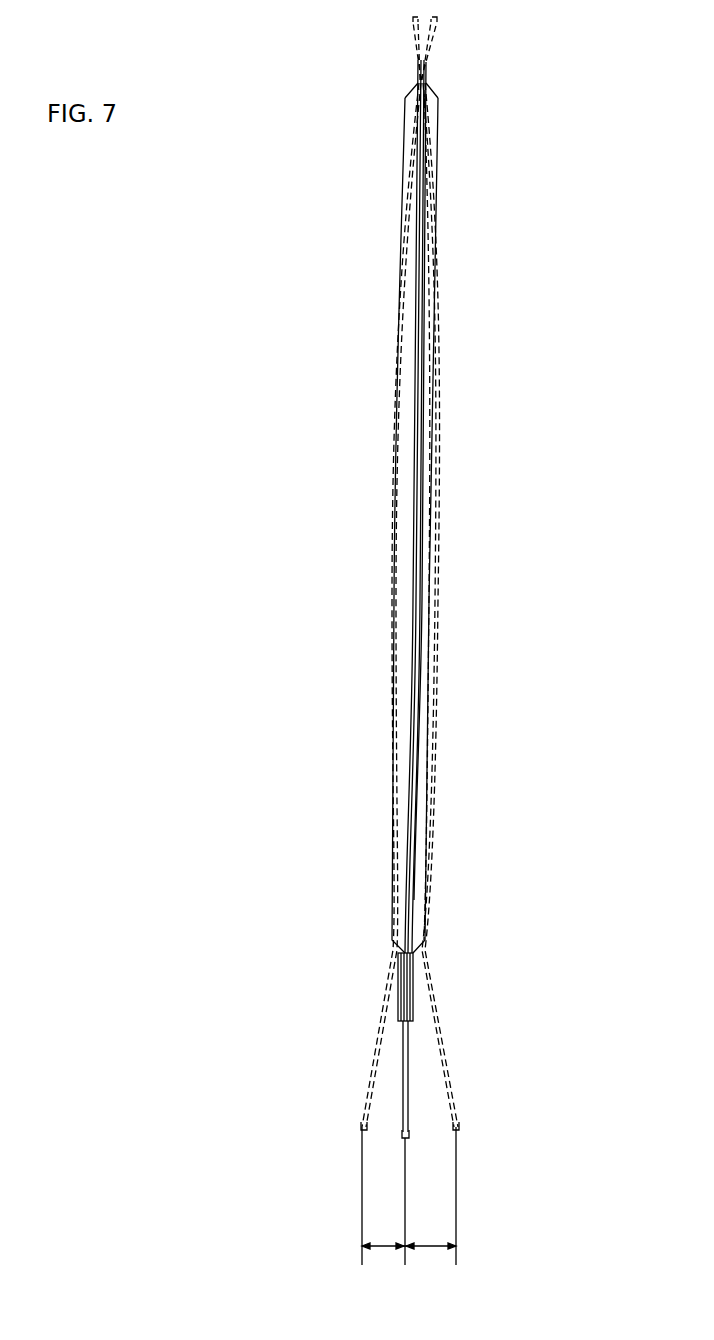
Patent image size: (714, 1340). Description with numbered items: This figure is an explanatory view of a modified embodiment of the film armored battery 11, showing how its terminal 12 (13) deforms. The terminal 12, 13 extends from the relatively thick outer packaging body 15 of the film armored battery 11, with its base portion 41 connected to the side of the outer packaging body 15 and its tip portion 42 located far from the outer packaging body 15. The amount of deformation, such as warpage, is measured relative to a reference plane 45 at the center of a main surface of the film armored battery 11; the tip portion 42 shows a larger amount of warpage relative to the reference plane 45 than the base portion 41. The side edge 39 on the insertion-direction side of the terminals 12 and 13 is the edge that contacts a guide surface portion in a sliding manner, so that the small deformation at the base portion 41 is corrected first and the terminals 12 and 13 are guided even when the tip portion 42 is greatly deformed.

The film armored battery 11 is at (453, 370).
The outer packaging body 15 is at (428, 546).
The base portion 41 is at (410, 1033).
The terminal 12 is at (488, 1076).
The terminal 13 is at (410, 1082).
The side edge 39 is at (405, 1137).
The tip portion 42 is at (532, 1132).
The reference plane 45 is at (405, 1207).